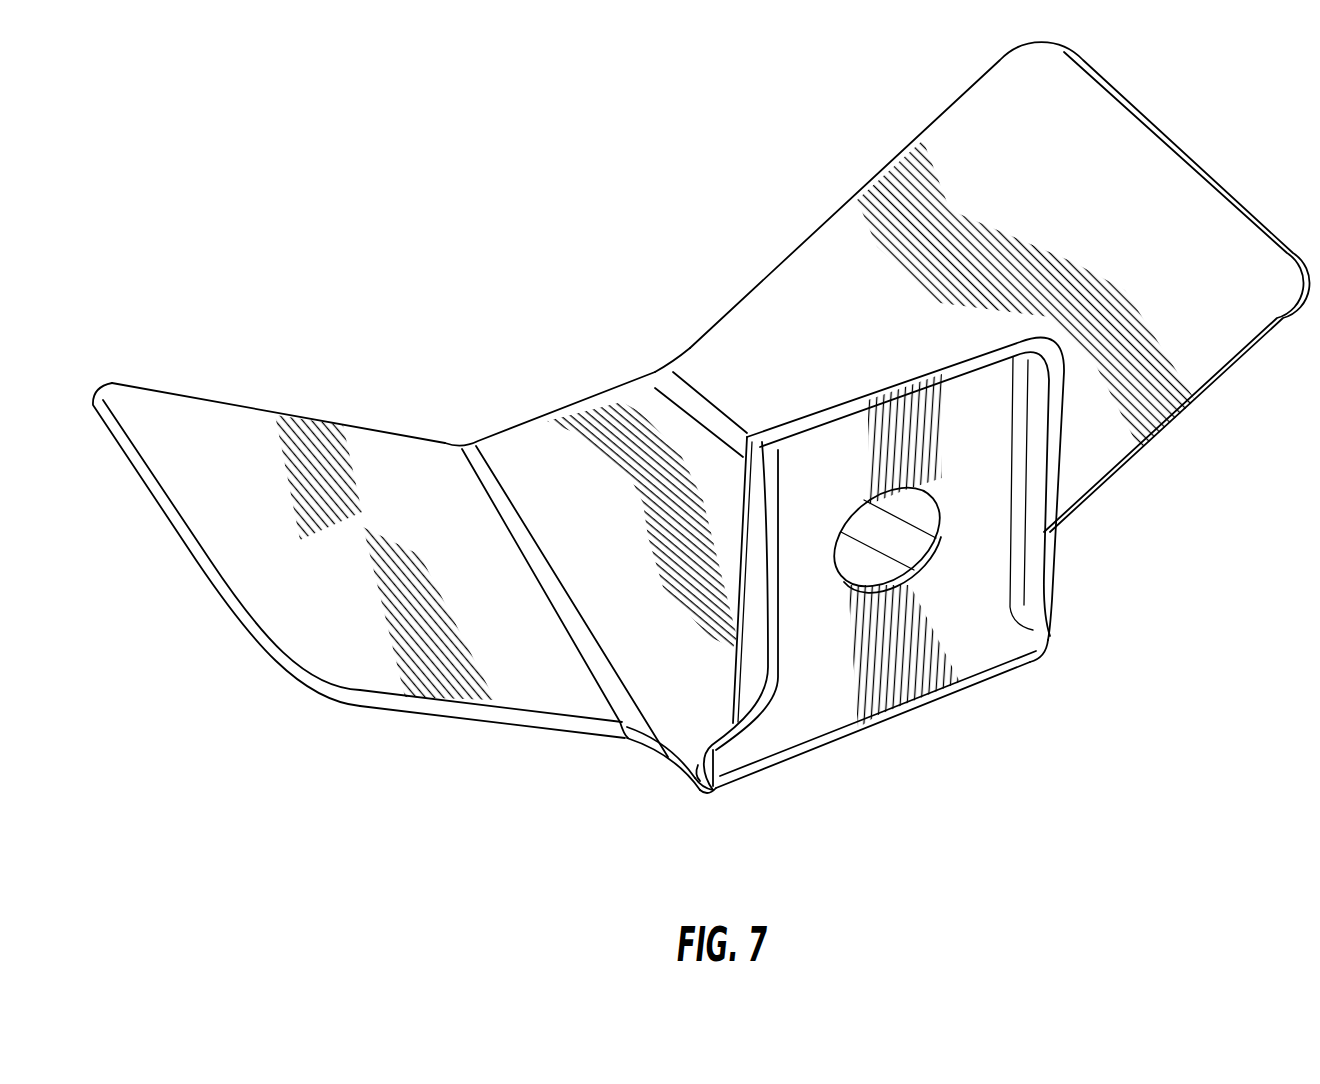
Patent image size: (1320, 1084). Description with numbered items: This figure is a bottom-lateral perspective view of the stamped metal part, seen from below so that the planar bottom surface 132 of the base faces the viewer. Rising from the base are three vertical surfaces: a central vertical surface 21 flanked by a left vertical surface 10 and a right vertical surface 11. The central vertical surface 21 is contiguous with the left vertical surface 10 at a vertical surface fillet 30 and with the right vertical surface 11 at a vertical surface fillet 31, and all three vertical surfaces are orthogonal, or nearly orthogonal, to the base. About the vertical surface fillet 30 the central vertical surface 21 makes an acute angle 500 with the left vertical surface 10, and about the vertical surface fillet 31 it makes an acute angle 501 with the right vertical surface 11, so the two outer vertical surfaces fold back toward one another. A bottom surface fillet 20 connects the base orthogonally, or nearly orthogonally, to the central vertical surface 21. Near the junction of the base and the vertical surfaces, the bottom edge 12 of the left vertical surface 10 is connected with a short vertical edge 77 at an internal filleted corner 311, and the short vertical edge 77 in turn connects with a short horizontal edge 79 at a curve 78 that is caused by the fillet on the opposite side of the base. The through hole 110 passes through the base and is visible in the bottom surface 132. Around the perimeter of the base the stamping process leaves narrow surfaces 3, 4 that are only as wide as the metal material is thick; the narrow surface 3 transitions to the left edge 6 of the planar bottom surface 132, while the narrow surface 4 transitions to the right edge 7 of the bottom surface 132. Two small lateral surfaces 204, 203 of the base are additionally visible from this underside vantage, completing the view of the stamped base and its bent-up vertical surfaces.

The narrow surface 3 is at (1052, 512).
The narrow surface 4 is at (770, 613).
The left edge 6 is at (1049, 640).
The right edge 7 is at (717, 763).
The left vertical surface 10 is at (328, 510).
The right vertical surface 11 is at (981, 189).
The bottom edge 12 is at (437, 708).
The bottom surface fillet 20 is at (898, 715).
The central vertical surface 21 is at (627, 455).
The vertical surface fillet 30 is at (468, 447).
The vertical surface fillet 31 is at (705, 408).
The short vertical edge 77 is at (665, 752).
The curve 78 is at (704, 780).
The short horizontal edge 79 is at (697, 770).
The through hole 110 is at (873, 540).
The planar bottom surface 132 is at (950, 642).
The small lateral surface 203 is at (1038, 452).
The small lateral surface 204 is at (748, 623).
The internal filleted corner 311 is at (622, 729).
The acute angle 500 is at (437, 442).
The acute angle 501 is at (676, 350).